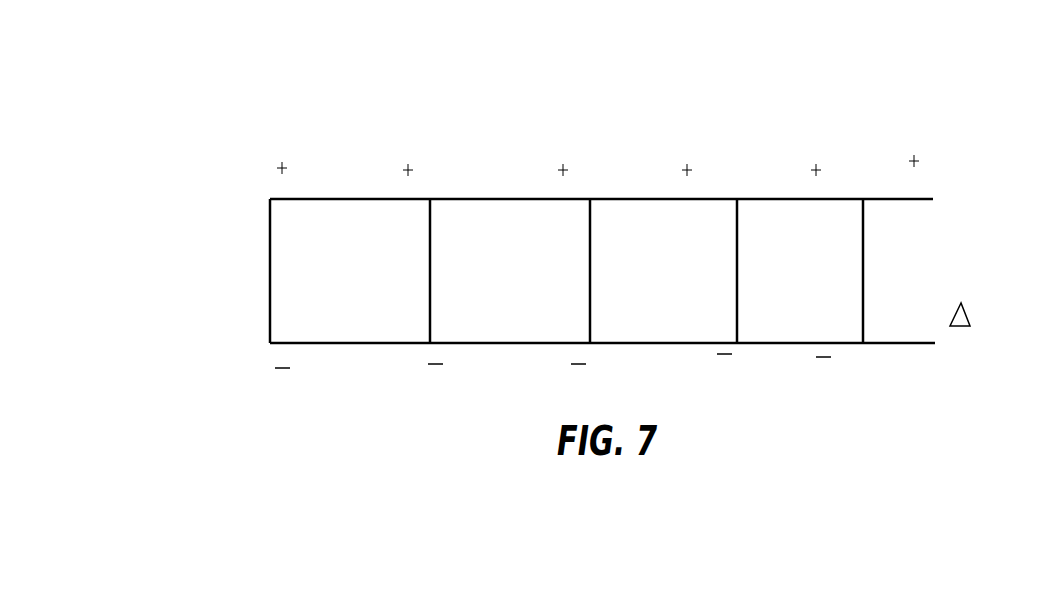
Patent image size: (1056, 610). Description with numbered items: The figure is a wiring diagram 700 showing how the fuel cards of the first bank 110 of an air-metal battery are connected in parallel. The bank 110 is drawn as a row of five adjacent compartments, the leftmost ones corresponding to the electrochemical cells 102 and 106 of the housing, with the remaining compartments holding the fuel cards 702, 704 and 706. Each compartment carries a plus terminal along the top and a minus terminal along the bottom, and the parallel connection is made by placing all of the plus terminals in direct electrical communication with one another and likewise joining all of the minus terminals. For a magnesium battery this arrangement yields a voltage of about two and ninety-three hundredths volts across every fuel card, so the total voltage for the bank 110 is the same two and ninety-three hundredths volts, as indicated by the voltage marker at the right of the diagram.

The battery configuration 700 is at (835, 92).
The first bank 110 is at (223, 283).
The electrochemical cell 102 is at (270, 252).
The electrochemical cell 106 is at (430, 273).
The fuel card 702 is at (590, 266).
The fuel card 704 is at (737, 275).
The fuel card 706 is at (800, 271).